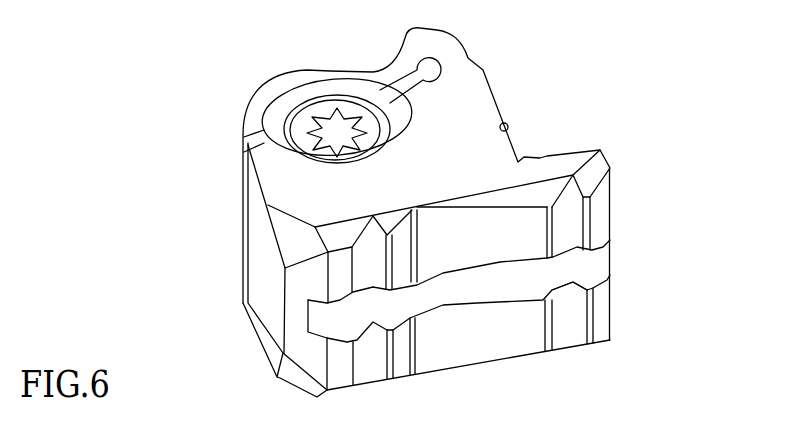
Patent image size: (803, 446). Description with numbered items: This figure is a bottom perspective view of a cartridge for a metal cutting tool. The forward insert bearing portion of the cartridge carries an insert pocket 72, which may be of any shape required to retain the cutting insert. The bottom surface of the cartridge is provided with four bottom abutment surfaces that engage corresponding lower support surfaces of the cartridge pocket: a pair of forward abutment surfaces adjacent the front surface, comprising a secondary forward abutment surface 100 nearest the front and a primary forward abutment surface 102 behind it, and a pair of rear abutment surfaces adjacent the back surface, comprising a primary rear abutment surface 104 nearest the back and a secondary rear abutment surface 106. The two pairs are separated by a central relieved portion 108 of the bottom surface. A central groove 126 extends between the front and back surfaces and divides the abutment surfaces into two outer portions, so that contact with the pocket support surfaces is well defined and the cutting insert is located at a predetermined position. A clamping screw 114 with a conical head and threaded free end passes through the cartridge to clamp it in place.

The insert pocket 72 is at (525, 90).
The clamping screw 114 is at (311, 110).
The primary rear abutment surface 104 is at (370, 263).
The secondary rear abutment surface 106 is at (402, 242).
The central relieved portion 108 is at (493, 237).
The primary forward abutment surface 102 is at (600, 150).
The secondary forward abutment surface 100 is at (599, 221).
The central groove 126 is at (592, 267).